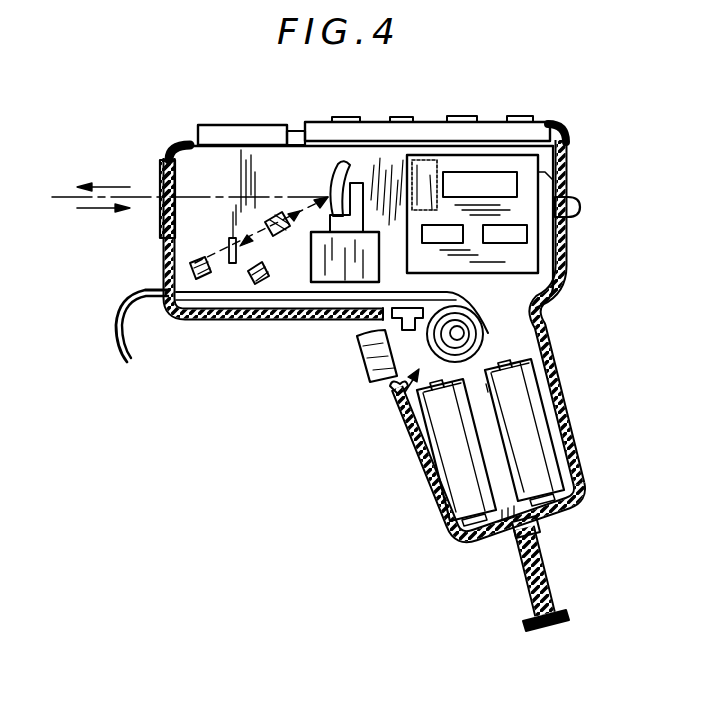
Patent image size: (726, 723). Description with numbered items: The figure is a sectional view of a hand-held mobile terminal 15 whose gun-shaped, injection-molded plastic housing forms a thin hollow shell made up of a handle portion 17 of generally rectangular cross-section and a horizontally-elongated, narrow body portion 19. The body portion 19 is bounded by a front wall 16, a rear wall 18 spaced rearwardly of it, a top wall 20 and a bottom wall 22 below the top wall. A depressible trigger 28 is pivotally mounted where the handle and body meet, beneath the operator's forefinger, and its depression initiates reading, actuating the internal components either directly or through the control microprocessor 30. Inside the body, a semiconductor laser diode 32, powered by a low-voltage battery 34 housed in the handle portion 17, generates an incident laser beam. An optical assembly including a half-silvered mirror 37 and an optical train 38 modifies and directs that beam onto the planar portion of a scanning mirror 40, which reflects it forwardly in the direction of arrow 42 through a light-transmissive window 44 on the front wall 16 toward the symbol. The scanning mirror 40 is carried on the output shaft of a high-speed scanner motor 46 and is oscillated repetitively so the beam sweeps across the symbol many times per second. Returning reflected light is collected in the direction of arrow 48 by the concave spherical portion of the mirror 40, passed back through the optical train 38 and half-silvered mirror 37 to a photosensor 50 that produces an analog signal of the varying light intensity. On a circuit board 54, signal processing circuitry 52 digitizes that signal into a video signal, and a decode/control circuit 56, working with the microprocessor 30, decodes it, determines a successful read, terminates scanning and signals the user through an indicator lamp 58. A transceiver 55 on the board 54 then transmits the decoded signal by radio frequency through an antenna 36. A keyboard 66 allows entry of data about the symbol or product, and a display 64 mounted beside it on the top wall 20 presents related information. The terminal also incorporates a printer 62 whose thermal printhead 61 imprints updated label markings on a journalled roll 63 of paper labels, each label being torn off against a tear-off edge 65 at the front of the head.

The terminal 15 is at (306, 446).
The front wall 16 is at (164, 280).
The handle portion 17 is at (592, 494).
The rear wall 18 is at (569, 250).
The body portion 19 is at (566, 136).
The top wall 20 is at (296, 130).
The bottom wall 22 is at (333, 322).
The trigger 28 is at (365, 364).
The control microprocessor 30 is at (452, 180).
The semiconductor laser diode 32 is at (245, 282).
The battery 34 is at (518, 400).
The antenna 36 is at (551, 580).
The half-silvered mirror 37 is at (236, 236).
The optical train 38 is at (268, 213).
The scanning mirror 40 is at (348, 162).
The arrow 42 is at (105, 186).
The light-transmissive window 44 is at (157, 160).
The scanner motor 46 is at (313, 274).
The arrow 48 is at (108, 212).
The photosensor 50 is at (195, 259).
The signal processing circuitry 52 is at (517, 234).
The circuit board 54 is at (560, 170).
The transceiver 55 is at (420, 177).
The decode/control circuit 56 is at (448, 236).
The indicator lamp 58 is at (582, 208).
The thermal printhead 61 is at (404, 331).
The printer 62 is at (402, 412).
The roll of paper labels 63 is at (468, 333).
The display 64 is at (245, 125).
The tear-off edge 65 is at (167, 312).
The keyboard 66 is at (485, 124).